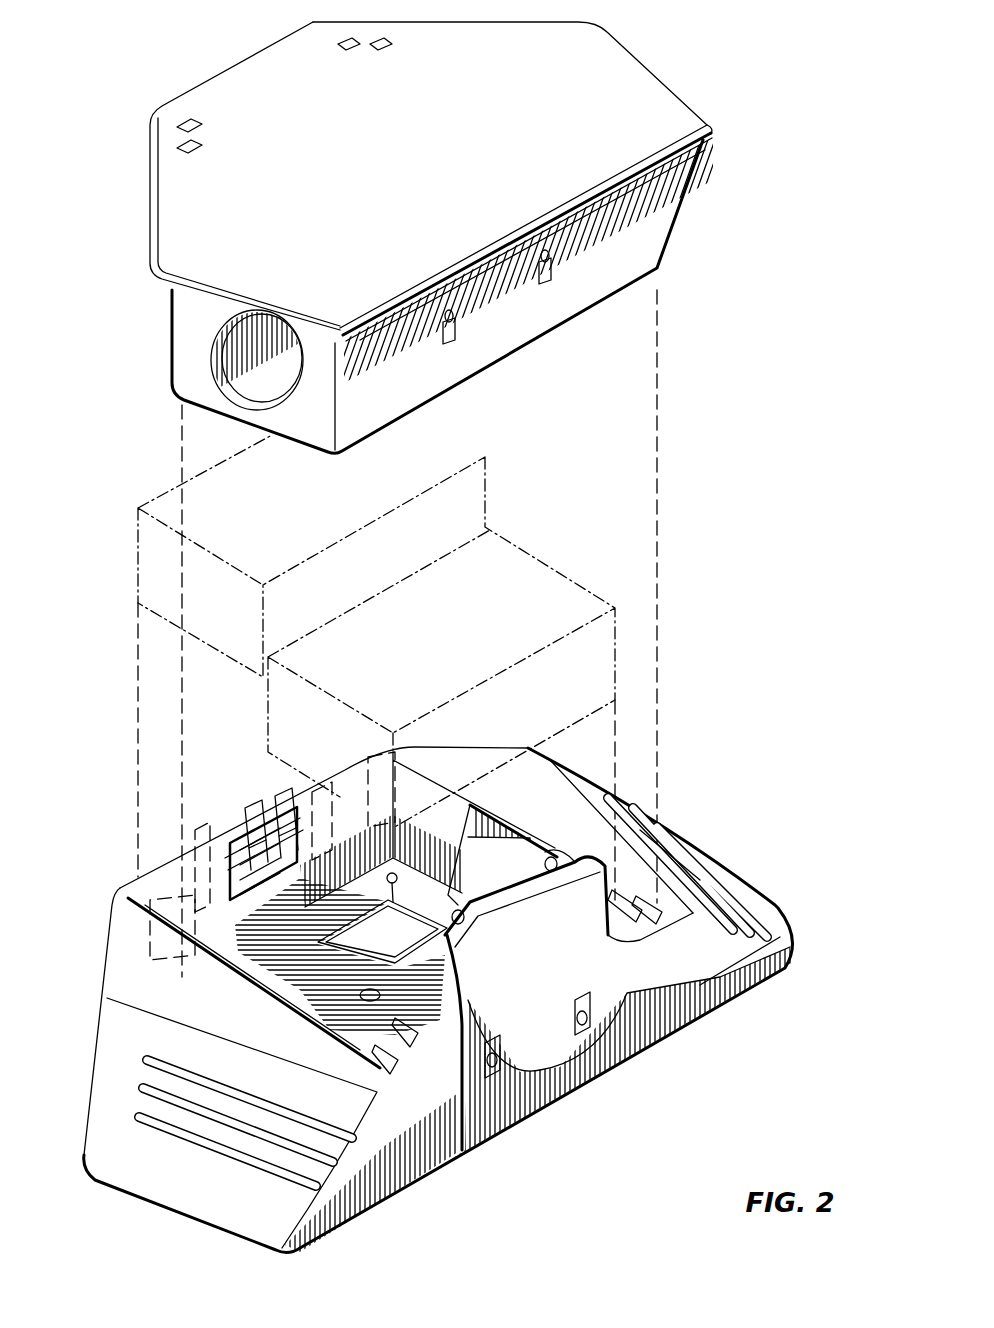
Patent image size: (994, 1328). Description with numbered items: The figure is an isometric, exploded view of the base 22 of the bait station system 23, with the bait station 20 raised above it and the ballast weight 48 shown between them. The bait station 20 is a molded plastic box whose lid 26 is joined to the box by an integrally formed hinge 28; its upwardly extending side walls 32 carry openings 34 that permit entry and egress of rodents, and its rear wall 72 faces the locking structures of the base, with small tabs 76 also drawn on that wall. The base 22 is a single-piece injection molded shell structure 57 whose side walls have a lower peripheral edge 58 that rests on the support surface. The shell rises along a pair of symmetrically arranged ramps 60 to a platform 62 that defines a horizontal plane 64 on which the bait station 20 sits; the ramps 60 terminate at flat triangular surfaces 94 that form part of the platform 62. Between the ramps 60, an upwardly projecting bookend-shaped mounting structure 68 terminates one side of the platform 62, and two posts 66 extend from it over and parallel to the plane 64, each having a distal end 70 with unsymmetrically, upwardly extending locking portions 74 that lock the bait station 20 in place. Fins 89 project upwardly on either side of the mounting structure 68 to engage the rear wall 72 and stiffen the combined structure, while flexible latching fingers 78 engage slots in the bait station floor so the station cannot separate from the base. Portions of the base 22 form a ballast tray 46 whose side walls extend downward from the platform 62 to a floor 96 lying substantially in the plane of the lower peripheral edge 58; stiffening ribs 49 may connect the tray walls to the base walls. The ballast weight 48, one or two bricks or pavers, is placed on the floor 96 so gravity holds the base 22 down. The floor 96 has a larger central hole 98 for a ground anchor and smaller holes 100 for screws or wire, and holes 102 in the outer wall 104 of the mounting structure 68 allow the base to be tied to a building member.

The bait station 20 is at (708, 94).
The base 22 is at (113, 876).
The bait station system 23 is at (714, 572).
The lid 26 is at (262, 98).
The hinge 28 is at (708, 150).
The side walls 32 is at (387, 388).
The openings 34 is at (218, 373).
The tray 46 is at (292, 924).
The ballast weight 48 is at (178, 485).
The stiffening ribs 49 is at (340, 772).
The shell structure 57 is at (745, 890).
The lower peripheral edge 58 is at (740, 985).
The ramps 60 is at (660, 812).
The platform 62 is at (170, 888).
The horizontal plane 64 is at (193, 1010).
The posts 66 is at (457, 900).
The mounting structure 68 is at (500, 907).
The distal end 70 is at (472, 820).
The rear wall 72 is at (612, 258).
The locking portions 74 is at (562, 857).
The tabs 76 is at (552, 262).
The latching fingers 78 is at (246, 817).
The fins 89 is at (630, 923).
The flat triangular surfaces 94 is at (549, 822).
The floor 96 is at (349, 908).
The central hole 98 is at (317, 997).
The holes 100 is at (382, 931).
The holes 102 is at (596, 1027).
The outer wall 104 is at (504, 1005).